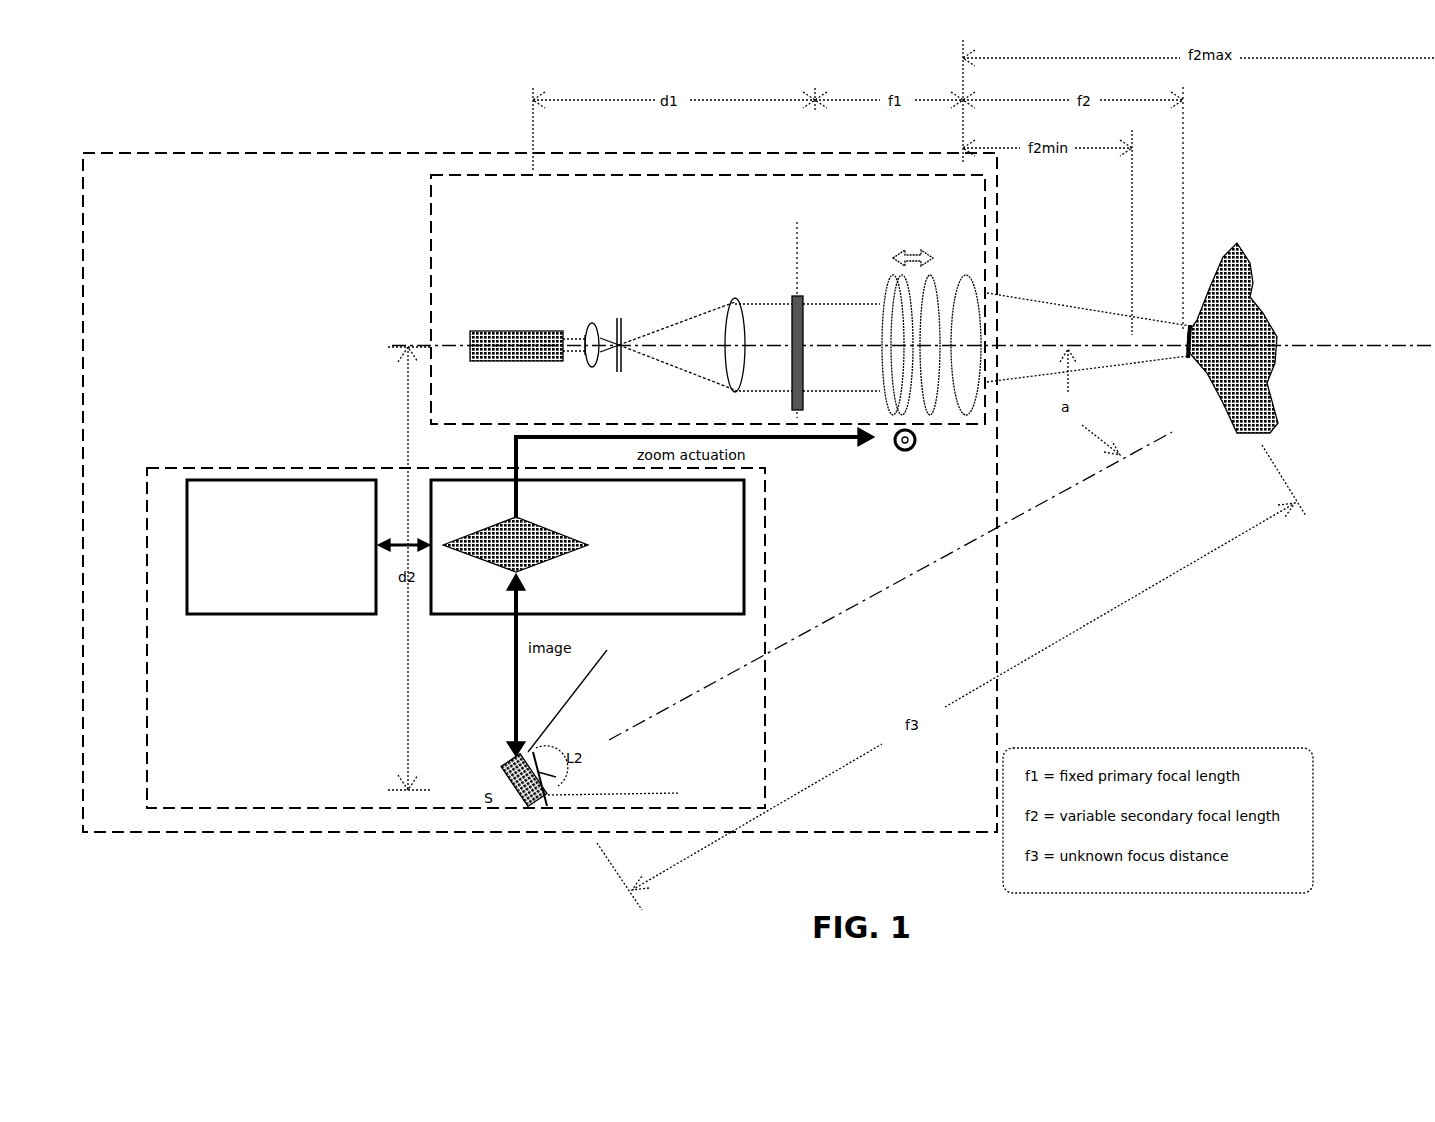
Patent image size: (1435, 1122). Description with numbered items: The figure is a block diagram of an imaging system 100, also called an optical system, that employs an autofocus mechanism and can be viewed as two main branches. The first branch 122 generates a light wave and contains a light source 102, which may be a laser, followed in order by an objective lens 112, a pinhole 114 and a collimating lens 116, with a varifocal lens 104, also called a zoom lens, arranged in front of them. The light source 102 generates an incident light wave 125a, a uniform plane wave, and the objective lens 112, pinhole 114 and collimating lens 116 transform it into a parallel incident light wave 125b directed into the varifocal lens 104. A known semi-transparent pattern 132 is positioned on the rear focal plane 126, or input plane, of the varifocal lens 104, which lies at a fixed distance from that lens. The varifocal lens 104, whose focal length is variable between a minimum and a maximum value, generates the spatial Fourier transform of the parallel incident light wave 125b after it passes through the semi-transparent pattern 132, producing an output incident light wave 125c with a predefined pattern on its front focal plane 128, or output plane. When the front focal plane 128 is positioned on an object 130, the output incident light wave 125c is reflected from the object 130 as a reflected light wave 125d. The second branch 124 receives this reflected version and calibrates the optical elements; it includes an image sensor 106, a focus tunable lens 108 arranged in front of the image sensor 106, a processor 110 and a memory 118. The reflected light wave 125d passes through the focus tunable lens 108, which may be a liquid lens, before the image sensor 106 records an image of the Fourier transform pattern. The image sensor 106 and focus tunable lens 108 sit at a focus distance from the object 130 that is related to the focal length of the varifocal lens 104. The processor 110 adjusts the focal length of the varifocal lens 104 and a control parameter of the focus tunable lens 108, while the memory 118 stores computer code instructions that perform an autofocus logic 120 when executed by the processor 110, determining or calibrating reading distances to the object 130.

The imaging system 100 is at (540, 492).
The light source 102 is at (520, 336).
The varifocal lens 104 is at (942, 268).
The image sensor 106 is at (517, 803).
The focus tunable lens 108 is at (540, 808).
The processor 110 is at (587, 547).
The objective lens 112 is at (585, 325).
The pinhole 114 is at (614, 318).
The collimating lens 116 is at (728, 300).
The memory 118 is at (281, 547).
The autofocus logic 120 is at (570, 562).
The first branch 122 is at (441, 172).
The second branch 124 is at (147, 468).
The incident light wave 125a is at (572, 357).
The parallel incident light wave 125b is at (753, 303).
The output incident light wave 125c is at (1043, 298).
The reflected light wave 125d is at (905, 583).
The rear focal plane 126 is at (797, 243).
The front focal plane 128 is at (1183, 177).
The object 130 is at (1260, 293).
The semi-transparent pattern 132 is at (803, 330).